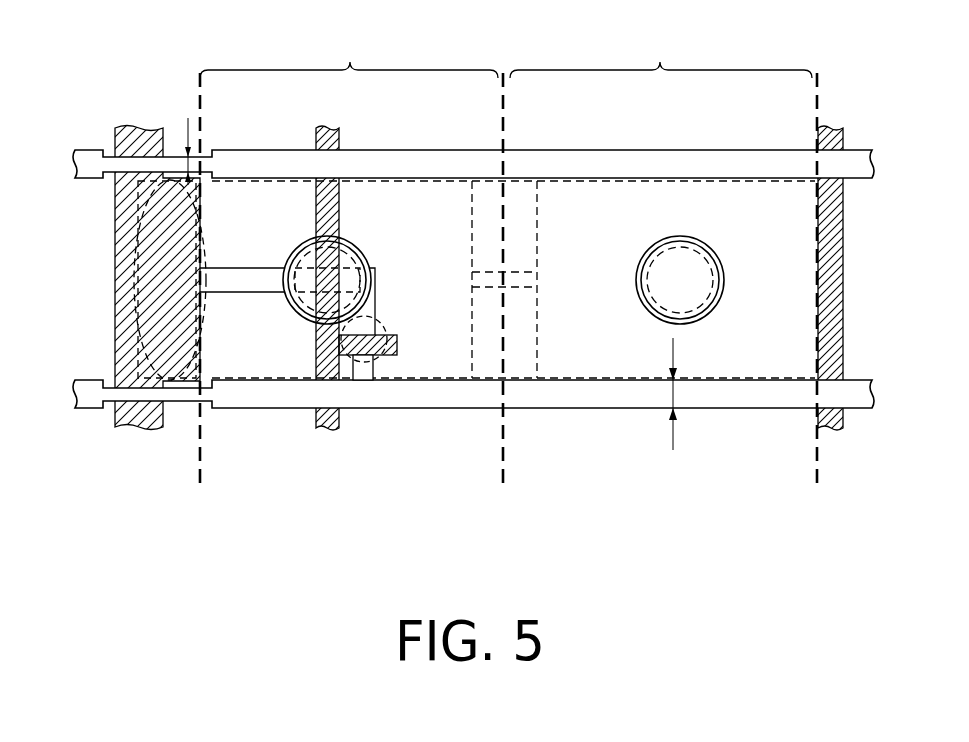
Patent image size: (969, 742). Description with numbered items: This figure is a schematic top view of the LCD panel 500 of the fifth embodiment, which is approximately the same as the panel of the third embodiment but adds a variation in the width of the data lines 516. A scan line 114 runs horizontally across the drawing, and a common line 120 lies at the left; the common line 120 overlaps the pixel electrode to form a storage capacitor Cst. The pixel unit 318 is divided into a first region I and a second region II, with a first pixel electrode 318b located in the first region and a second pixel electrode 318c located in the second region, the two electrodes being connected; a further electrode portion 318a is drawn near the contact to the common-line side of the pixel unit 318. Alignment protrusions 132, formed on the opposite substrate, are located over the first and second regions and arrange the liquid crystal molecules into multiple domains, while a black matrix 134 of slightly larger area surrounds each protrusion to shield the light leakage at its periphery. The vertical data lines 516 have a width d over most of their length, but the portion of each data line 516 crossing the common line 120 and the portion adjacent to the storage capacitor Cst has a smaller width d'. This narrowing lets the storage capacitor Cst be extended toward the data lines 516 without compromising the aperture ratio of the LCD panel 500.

The scan line 114 is at (315, 357).
The common line 120 is at (125, 353).
The alignment protrusion 132 is at (352, 262).
The black matrix 134 is at (365, 252).
The pixel unit 318 is at (620, 517).
The first pixel electrode portion 318a is at (383, 382).
The first pixel electrode 318b is at (433, 357).
The second pixel electrode 318c is at (580, 352).
The LCD panel 500 is at (890, 514).
The data line 516 is at (857, 156).
The storage capacitor Cst is at (116, 234).
The width of data lines d is at (696, 408).
The width of a portion of the data lines d' is at (179, 127).